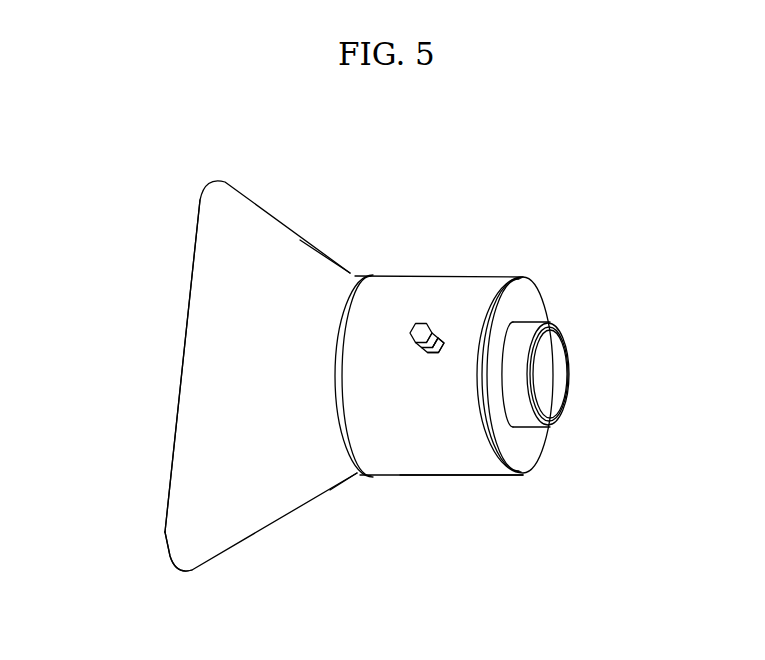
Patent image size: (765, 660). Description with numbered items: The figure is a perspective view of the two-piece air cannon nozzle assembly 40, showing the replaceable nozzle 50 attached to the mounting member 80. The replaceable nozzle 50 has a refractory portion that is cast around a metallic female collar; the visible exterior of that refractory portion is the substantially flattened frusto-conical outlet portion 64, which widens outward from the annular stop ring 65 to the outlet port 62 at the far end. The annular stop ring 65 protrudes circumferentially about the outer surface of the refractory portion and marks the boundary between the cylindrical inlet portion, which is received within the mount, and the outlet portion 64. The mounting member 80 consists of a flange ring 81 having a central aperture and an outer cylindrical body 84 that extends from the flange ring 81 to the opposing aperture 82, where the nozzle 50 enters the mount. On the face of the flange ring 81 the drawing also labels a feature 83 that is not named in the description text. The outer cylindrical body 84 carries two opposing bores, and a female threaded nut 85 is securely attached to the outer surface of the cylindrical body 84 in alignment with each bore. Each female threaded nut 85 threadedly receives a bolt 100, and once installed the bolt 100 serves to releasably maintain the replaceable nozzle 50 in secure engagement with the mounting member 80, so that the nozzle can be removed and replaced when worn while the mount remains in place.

The air cannon nozzle assembly 40 is at (403, 152).
The replaceable nozzle 50 is at (262, 198).
The outlet port 62 is at (165, 532).
The flattened frusto-conical outlet portion 64 is at (245, 480).
The annular stop ring 65 is at (355, 472).
The mounting member 80 is at (477, 287).
The flange ring 81 is at (532, 307).
The opposing aperture 82 is at (355, 447).
The outlet boss 83 is at (523, 428).
The outer cylindrical body 84 is at (460, 463).
The female threaded nut 85 is at (445, 340).
The bolt 100 is at (421, 322).